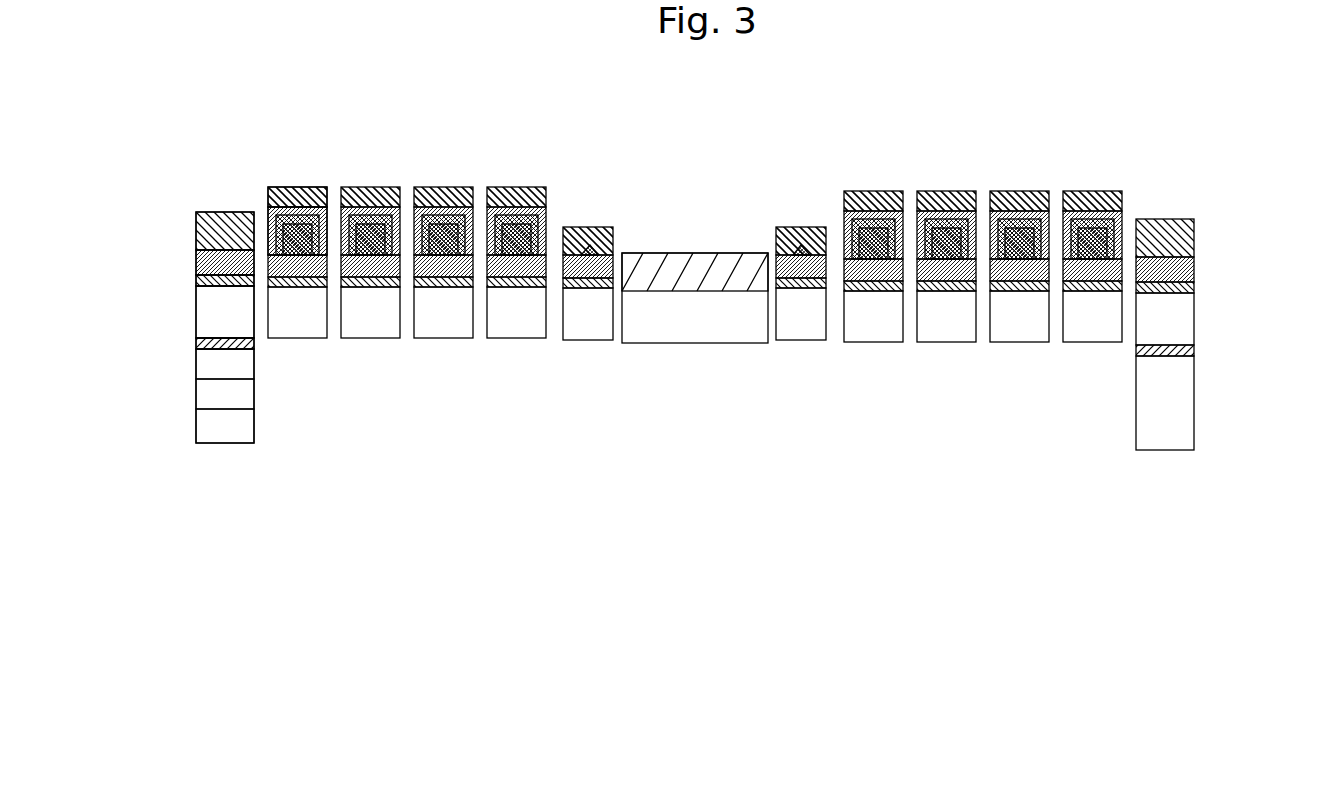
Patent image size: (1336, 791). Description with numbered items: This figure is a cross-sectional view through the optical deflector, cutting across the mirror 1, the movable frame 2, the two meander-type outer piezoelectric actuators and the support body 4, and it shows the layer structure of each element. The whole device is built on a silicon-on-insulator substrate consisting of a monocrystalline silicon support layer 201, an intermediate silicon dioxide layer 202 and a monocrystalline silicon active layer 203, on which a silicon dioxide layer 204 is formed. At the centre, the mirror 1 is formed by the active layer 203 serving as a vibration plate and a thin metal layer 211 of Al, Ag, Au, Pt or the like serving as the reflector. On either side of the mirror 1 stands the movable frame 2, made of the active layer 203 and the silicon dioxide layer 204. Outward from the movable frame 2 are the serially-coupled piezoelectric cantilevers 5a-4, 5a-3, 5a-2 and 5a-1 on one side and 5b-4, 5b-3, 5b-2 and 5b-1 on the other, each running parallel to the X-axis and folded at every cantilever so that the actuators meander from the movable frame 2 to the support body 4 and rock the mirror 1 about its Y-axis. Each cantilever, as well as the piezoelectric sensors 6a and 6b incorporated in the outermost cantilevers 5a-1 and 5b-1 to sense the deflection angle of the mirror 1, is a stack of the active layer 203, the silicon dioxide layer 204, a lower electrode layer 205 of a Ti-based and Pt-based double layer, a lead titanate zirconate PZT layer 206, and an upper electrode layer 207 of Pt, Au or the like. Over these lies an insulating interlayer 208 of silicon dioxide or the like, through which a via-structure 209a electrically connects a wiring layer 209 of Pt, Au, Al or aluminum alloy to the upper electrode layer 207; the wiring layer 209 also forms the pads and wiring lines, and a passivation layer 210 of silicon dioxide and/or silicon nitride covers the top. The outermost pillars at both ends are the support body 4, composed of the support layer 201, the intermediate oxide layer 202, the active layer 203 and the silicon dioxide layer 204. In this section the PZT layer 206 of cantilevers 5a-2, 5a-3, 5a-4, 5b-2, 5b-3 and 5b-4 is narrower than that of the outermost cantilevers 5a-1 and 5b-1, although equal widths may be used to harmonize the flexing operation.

The mirror 1 is at (692, 161).
The movable frame 2 is at (586, 161).
The support body 4 is at (257, 278).
The piezoelectric cantilever 5a-1 is at (325, 83).
The piezoelectric cantilever 5a-2 is at (398, 83).
The piezoelectric cantilever 5a-3 is at (471, 83).
The piezoelectric cantilever 5a-4 is at (544, 83).
The piezoelectric cantilever 5b-1 is at (1122, 87).
The piezoelectric cantilever 5b-2 is at (1049, 87).
The piezoelectric cantilever 5b-3 is at (976, 87).
The piezoelectric cantilever 5b-4 is at (903, 87).
The piezoelectric sensor 6a is at (262, 122).
The piezoelectric sensor 6b is at (1129, 128).
The monocrystalline silicon support layer 201 is at (202, 428).
The intermediate silicon dioxide layer 202 is at (196, 392).
The monocrystalline silicon active layer 203 is at (198, 362).
The silicon dioxide layer 204 is at (198, 344).
The lower electrode layer 205 is at (200, 310).
The PZT layer 206 is at (198, 272).
The upper electrode layer 207 is at (267, 216).
The insulating interlayer 208 is at (267, 206).
The wiring layer 209 is at (267, 197).
The via-structure 209a is at (548, 226).
The passivation layer 210 is at (267, 189).
The metal layer 211 is at (695, 265).